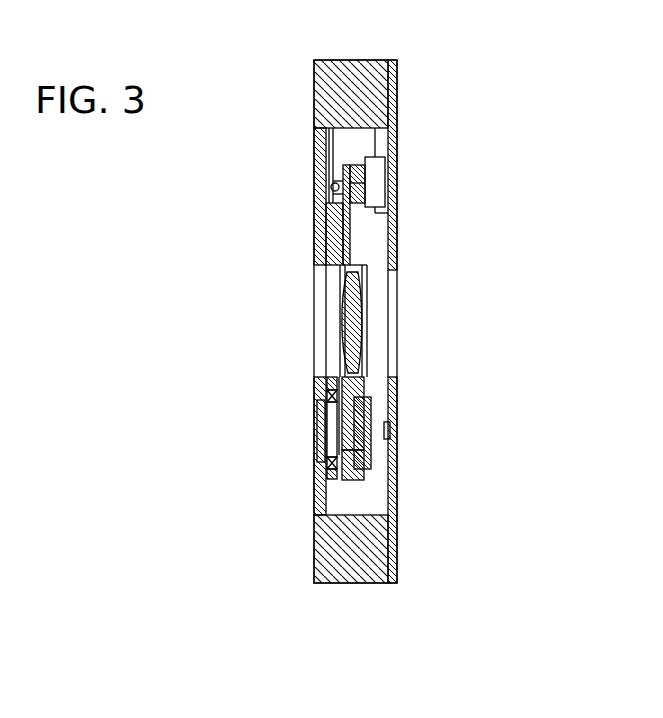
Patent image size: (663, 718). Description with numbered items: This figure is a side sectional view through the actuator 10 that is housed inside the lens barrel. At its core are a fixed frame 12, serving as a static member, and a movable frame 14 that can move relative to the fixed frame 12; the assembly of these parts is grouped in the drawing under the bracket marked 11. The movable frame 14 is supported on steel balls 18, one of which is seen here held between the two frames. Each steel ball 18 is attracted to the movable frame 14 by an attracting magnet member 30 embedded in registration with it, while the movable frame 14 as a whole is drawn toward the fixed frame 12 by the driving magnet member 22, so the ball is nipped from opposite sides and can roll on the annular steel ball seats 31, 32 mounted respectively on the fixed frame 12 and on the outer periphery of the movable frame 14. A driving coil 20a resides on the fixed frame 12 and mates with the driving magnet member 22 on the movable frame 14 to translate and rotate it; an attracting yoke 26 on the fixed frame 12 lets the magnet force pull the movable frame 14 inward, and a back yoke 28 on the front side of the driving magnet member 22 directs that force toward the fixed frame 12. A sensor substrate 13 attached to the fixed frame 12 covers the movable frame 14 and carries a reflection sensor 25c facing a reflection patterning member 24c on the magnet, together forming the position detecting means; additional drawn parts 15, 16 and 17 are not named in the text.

The actuator 10 is at (252, 80).
The lens drive assembly 11 is at (213, 133).
The fixed frame 12 is at (330, 140).
The sensor substrate 13 is at (392, 246).
The movable frame 14 is at (345, 226).
The frame 15 is at (375, 142).
The lens 16 is at (360, 315).
The drive element 17 is at (372, 170).
The steel ball 18 is at (333, 187).
The driving coil 20a is at (332, 464).
The driving magnet member 22 is at (356, 413).
The reflection patterning member 24c is at (372, 447).
The reflection sensor 25c is at (388, 428).
The attracting yoke 26 is at (320, 418).
The back yoke 28 is at (359, 462).
The attracting magnet member 30 is at (360, 192).
The steel ball seat 31 is at (331, 180).
The steel ball seat 32 is at (343, 167).